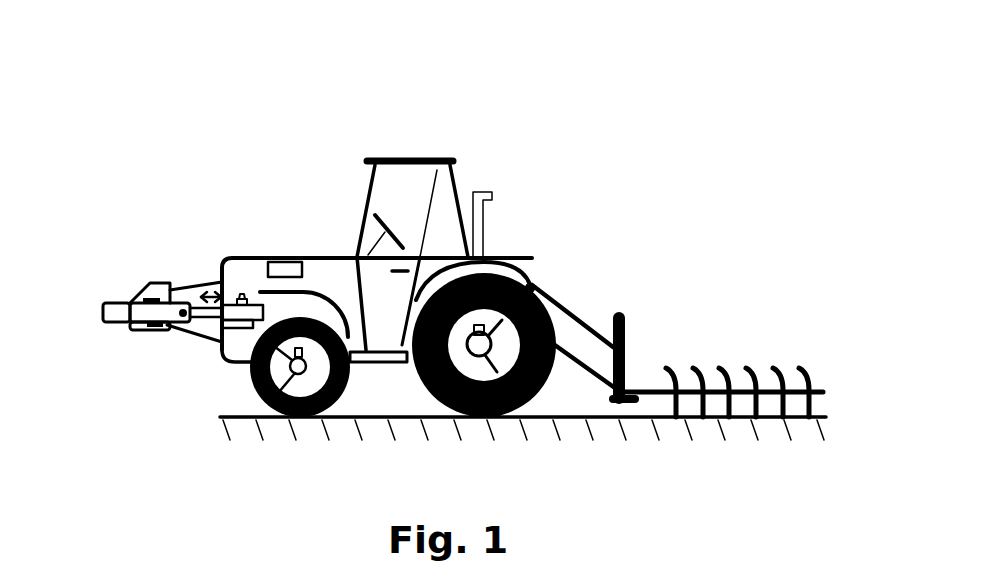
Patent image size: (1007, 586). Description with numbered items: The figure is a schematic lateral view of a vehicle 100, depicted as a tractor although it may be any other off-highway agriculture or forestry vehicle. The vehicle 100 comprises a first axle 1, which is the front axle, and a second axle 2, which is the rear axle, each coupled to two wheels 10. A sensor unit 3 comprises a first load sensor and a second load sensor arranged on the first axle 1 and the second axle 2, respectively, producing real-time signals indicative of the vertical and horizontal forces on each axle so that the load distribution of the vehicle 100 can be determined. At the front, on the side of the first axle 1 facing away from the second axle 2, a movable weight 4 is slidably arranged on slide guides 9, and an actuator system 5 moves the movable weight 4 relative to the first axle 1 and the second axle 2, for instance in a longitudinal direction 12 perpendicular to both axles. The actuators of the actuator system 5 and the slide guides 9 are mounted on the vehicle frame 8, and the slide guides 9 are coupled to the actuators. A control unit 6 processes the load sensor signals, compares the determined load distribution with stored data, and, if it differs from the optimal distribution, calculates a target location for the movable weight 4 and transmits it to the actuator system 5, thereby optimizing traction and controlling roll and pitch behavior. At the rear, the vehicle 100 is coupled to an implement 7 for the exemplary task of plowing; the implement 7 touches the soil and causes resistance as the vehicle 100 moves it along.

The vehicle 100 is at (562, 104).
The first axle 1 is at (263, 413).
The second axle 2 is at (512, 412).
The sensor unit 3 is at (263, 358).
The movable weight 4 is at (137, 293).
The actuator system 5 is at (233, 313).
The control unit 6 is at (283, 260).
The implement 7 is at (724, 372).
The vehicle frame 8 is at (223, 287).
The slide guides 9 is at (102, 312).
The wheels 10 is at (330, 410).
The longitudinal direction 12 is at (213, 287).